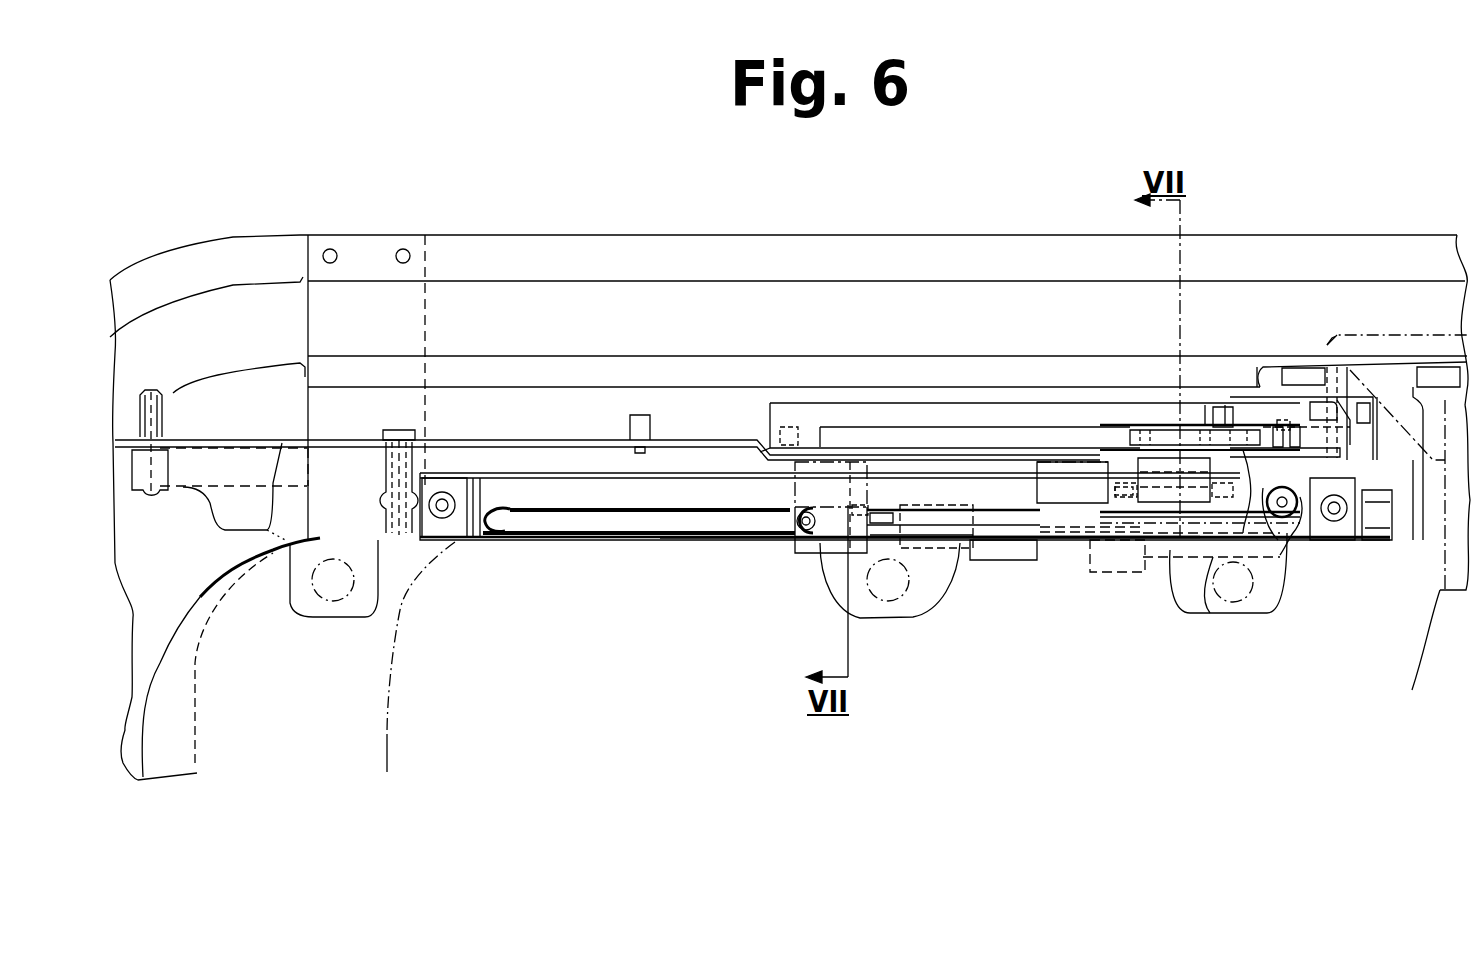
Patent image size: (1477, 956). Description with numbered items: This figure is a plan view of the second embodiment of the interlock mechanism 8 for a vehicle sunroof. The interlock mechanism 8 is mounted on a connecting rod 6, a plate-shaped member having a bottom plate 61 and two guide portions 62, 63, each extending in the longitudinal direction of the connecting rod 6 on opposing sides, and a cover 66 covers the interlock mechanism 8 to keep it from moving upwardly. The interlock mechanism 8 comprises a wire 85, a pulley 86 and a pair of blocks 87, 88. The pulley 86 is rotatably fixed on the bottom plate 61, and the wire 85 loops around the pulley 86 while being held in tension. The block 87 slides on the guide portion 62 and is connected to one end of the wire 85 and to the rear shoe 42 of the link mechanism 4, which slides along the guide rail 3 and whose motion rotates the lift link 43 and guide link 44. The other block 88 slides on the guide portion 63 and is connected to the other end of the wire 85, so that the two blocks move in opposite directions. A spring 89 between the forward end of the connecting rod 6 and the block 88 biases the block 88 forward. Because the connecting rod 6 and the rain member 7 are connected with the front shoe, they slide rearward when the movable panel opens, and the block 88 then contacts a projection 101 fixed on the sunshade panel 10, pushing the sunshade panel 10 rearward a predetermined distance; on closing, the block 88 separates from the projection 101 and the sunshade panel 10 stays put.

The guide rail 3 is at (679, 290).
The link mechanism 4 is at (1110, 392).
The connecting rod 6 is at (725, 541).
The rain member 7 is at (1440, 545).
The interlock mechanism 8 is at (1072, 546).
The sunshade panel 10 is at (385, 752).
The rear shoe 42 is at (1396, 378).
The lift link 43 is at (1207, 425).
The guide link 44 is at (552, 440).
The bottom plate 61 is at (933, 493).
The guide portion 62 is at (990, 470).
The guide portion 63 is at (1107, 540).
The cover 66 is at (455, 540).
The wire 85 is at (1150, 535).
The pulley 86 is at (1296, 540).
The block 87 is at (1190, 510).
The block 88 is at (808, 545).
The spring 89 is at (652, 523).
The projection 101 is at (1008, 553).